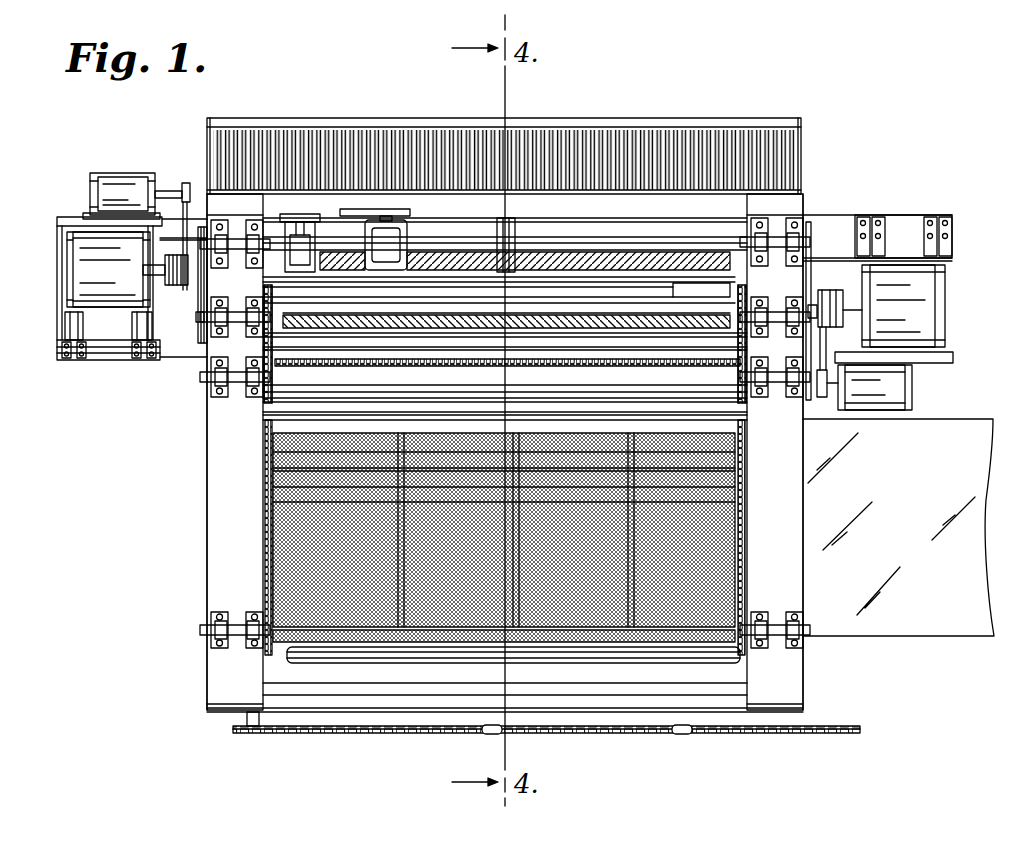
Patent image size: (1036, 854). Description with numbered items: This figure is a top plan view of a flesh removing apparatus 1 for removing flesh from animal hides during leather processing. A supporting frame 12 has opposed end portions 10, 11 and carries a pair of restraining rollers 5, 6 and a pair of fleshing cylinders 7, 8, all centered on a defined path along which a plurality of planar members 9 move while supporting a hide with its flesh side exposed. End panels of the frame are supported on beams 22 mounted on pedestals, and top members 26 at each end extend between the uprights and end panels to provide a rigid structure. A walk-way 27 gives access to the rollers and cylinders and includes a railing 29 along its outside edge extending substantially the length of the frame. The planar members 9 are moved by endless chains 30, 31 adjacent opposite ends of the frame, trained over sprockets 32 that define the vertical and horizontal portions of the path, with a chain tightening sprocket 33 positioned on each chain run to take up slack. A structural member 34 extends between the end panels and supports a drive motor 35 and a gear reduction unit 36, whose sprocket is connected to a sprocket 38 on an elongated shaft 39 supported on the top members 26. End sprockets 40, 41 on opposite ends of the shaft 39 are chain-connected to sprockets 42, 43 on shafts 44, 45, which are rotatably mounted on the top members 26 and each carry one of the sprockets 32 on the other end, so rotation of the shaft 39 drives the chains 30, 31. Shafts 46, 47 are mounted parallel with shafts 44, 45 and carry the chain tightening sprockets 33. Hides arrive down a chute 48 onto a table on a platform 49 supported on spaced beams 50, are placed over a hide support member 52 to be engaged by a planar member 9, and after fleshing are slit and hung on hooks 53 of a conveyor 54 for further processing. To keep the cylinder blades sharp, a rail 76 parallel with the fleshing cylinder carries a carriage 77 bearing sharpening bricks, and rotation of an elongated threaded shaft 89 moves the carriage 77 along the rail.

The flesh removing apparatus 1 is at (793, 105).
The restraining roller 5 is at (683, 282).
The restraining roller 6 is at (626, 310).
The fleshing cylinder 7 is at (707, 265).
The fleshing cylinder 8 is at (692, 322).
The planar member 9 is at (645, 665).
The end portion 10 is at (800, 528).
The end portion 11 is at (207, 550).
The supporting frame 12 is at (208, 702).
The beam 22 is at (104, 365).
The top member 26 is at (787, 208).
The walk-way 27 is at (574, 150).
The railing 29 is at (655, 124).
The endless chain 30 is at (745, 470).
The endless chain 31 is at (265, 512).
The sprocket 32 is at (748, 608).
The chain tightening sprocket 33 is at (262, 398).
The structural member 34 is at (656, 235).
The drive motor 35 is at (408, 240).
The gear reduction unit 36 is at (393, 235).
The sprocket 38 is at (265, 224).
The elongated shaft 39 is at (527, 245).
The end sprocket 40 is at (808, 232).
The end sprocket 41 is at (200, 230).
The sprocket 42 is at (802, 305).
The sprocket 43 is at (200, 335).
The shaft 44 is at (770, 298).
The shaft 45 is at (230, 340).
The shaft 46 is at (758, 395).
The shaft 47 is at (233, 400).
The chute 48 is at (992, 468).
The platform 49 is at (300, 545).
The beam 50 is at (398, 455).
The hide support member 52 is at (540, 372).
The hook 53 is at (553, 420).
The conveyor 54 is at (600, 735).
The rail 76 is at (380, 340).
The carriage 77 is at (289, 205).
The elongated threaded shaft 89 is at (446, 360).